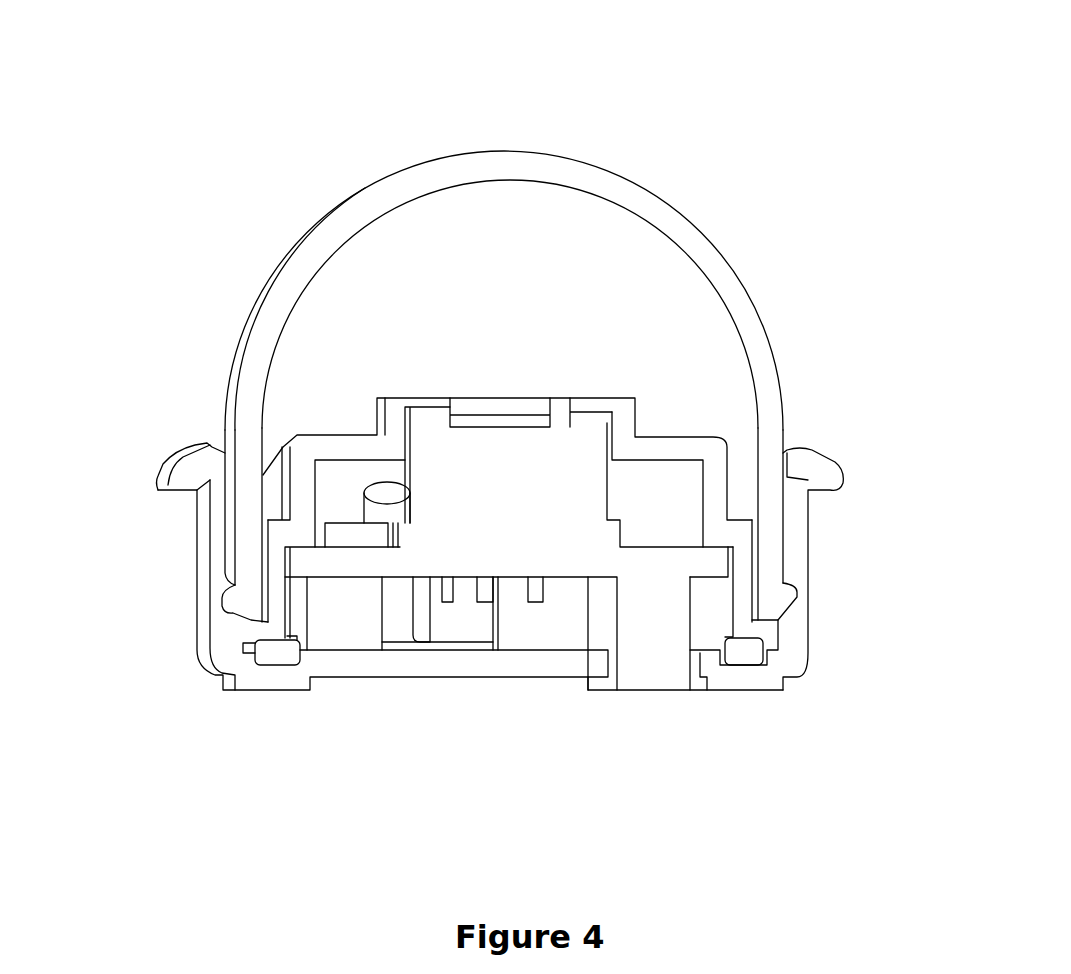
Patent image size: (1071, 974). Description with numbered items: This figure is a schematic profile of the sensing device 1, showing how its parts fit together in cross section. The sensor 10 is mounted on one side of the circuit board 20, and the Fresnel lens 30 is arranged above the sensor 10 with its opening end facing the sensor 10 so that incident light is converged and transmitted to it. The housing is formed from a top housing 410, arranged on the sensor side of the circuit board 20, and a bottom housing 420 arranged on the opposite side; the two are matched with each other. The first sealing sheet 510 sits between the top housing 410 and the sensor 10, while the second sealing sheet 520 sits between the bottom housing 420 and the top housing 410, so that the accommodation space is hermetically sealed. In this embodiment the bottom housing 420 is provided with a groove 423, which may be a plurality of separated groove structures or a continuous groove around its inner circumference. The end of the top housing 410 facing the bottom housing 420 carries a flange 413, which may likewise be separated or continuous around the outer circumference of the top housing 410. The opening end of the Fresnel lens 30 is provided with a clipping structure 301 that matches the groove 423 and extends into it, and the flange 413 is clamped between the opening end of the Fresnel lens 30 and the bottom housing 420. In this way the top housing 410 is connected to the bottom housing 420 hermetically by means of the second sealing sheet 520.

The sensing device 1 is at (258, 110).
The Fresnel lens 30 is at (416, 351).
The clipping structure 301 is at (250, 595).
The first sealing sheet 510 is at (590, 415).
The sensor 10 is at (595, 480).
The circuit board 20 is at (640, 540).
The top housing 410 is at (820, 625).
The bottom housing 420 is at (490, 622).
The flange 413 is at (245, 630).
The groove 423 is at (235, 612).
The second sealing sheet 520 is at (742, 665).